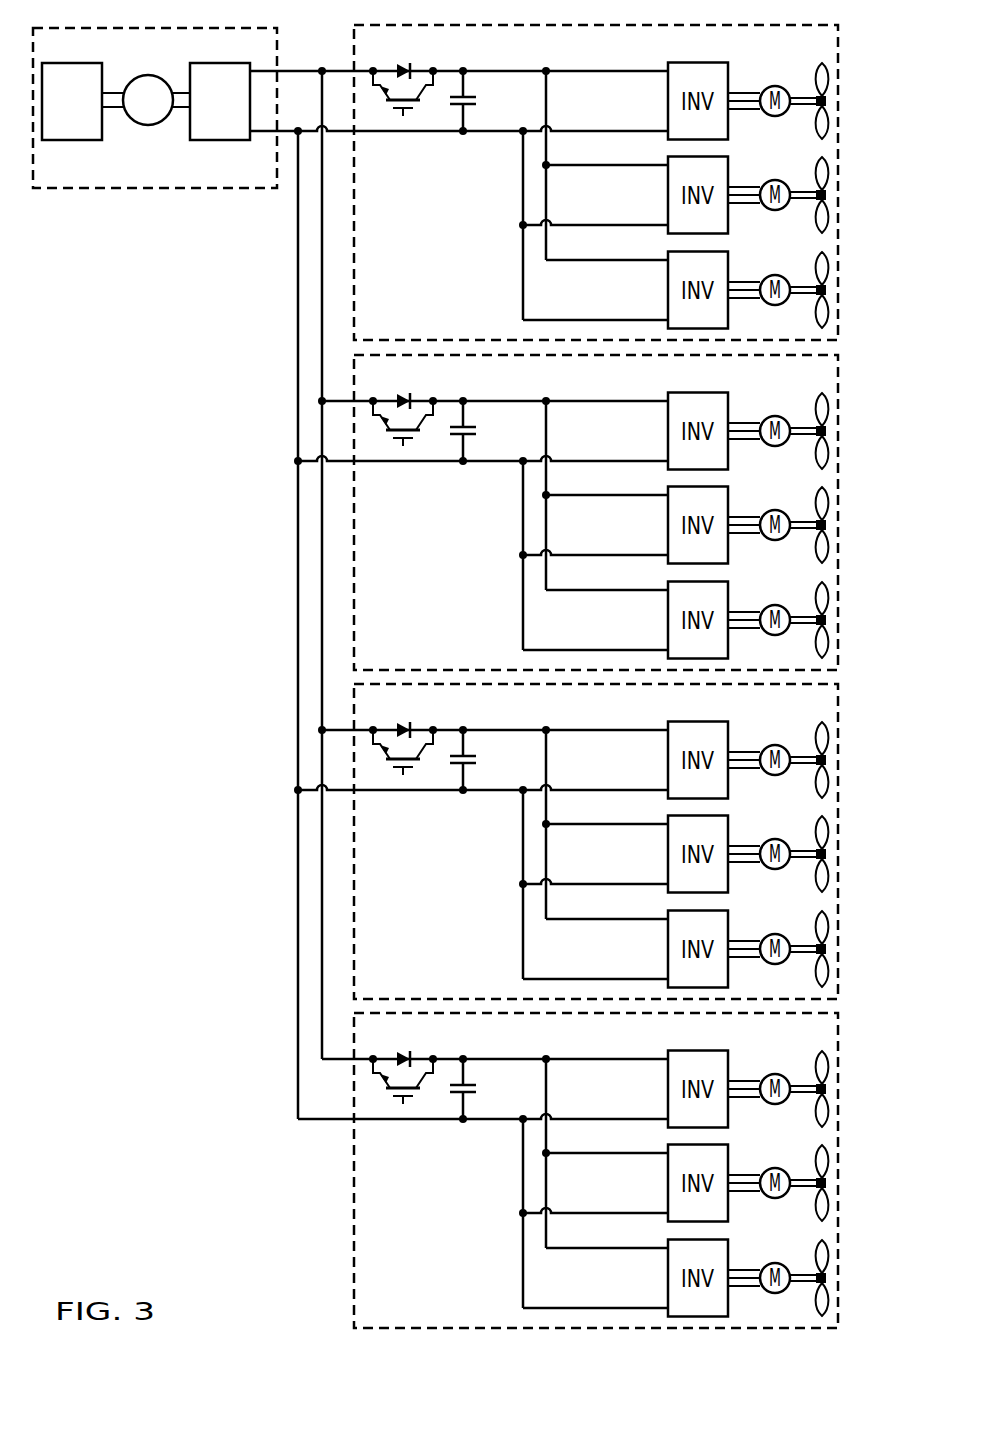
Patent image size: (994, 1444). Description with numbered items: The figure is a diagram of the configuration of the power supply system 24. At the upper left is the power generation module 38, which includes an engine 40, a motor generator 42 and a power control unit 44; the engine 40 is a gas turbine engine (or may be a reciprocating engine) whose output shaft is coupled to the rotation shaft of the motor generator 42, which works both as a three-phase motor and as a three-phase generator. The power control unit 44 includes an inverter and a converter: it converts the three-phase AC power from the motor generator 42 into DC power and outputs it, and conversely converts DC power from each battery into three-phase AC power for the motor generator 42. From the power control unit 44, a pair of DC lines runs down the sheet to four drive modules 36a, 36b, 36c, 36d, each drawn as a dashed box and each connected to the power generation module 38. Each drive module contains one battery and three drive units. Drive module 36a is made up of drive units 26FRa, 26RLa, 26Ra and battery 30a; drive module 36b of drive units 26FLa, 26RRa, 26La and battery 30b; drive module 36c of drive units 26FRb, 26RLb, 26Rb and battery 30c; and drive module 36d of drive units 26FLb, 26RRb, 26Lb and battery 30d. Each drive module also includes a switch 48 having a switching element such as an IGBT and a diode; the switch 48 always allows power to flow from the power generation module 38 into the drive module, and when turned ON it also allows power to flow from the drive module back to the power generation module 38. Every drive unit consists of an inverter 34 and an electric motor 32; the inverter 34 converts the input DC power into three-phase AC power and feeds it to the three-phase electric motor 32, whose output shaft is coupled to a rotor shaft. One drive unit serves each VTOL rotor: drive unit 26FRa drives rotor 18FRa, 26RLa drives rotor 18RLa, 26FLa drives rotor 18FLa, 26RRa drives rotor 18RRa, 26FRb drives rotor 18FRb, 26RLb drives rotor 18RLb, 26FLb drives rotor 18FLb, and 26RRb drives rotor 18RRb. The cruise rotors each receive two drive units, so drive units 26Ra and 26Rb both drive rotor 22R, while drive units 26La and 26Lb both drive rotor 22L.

The power supply system 24 is at (164, 283).
The power generation module 38 is at (99, 190).
The engine 40 is at (74, 140).
The motor generator 42 is at (147, 125).
The power control unit 44 is at (221, 140).
The drive module 36a is at (353, 253).
The drive module 36b is at (353, 583).
The drive module 36c is at (353, 912).
The drive module 36d is at (353, 1241).
The switch 48 is at (413, 67).
The battery 30a is at (478, 100).
The battery 30b is at (478, 430).
The battery 30c is at (478, 759).
The battery 30d is at (478, 1088).
The drive unit 26FRa is at (661, 91).
The drive unit 26RLa is at (661, 185).
The drive unit 26Ra is at (661, 280).
The drive unit 26FLa is at (661, 421).
The drive unit 26RRa is at (661, 515).
The drive unit 26La is at (661, 610).
The drive unit 26FRb is at (661, 750).
The drive unit 26RLb is at (661, 844).
The drive unit 26Rb is at (661, 939).
The drive unit 26FLb is at (661, 1079).
The drive unit 26RRb is at (661, 1173).
The drive unit 26Lb is at (661, 1268).
The inverter 34 is at (668, 108).
The electric motor 32 is at (768, 87).
The rotor 18FRa is at (821, 61).
The rotor 18RLa is at (821, 155).
The rotor 18FLa is at (821, 391).
The rotor 18RRa is at (821, 485).
The rotor 18FRb is at (821, 720).
The rotor 18RLb is at (821, 814).
The rotor 18FLb is at (821, 1049).
The rotor 18RRb is at (821, 1143).
The rotor 22R is at (821, 250).
The rotor 22L is at (821, 580).